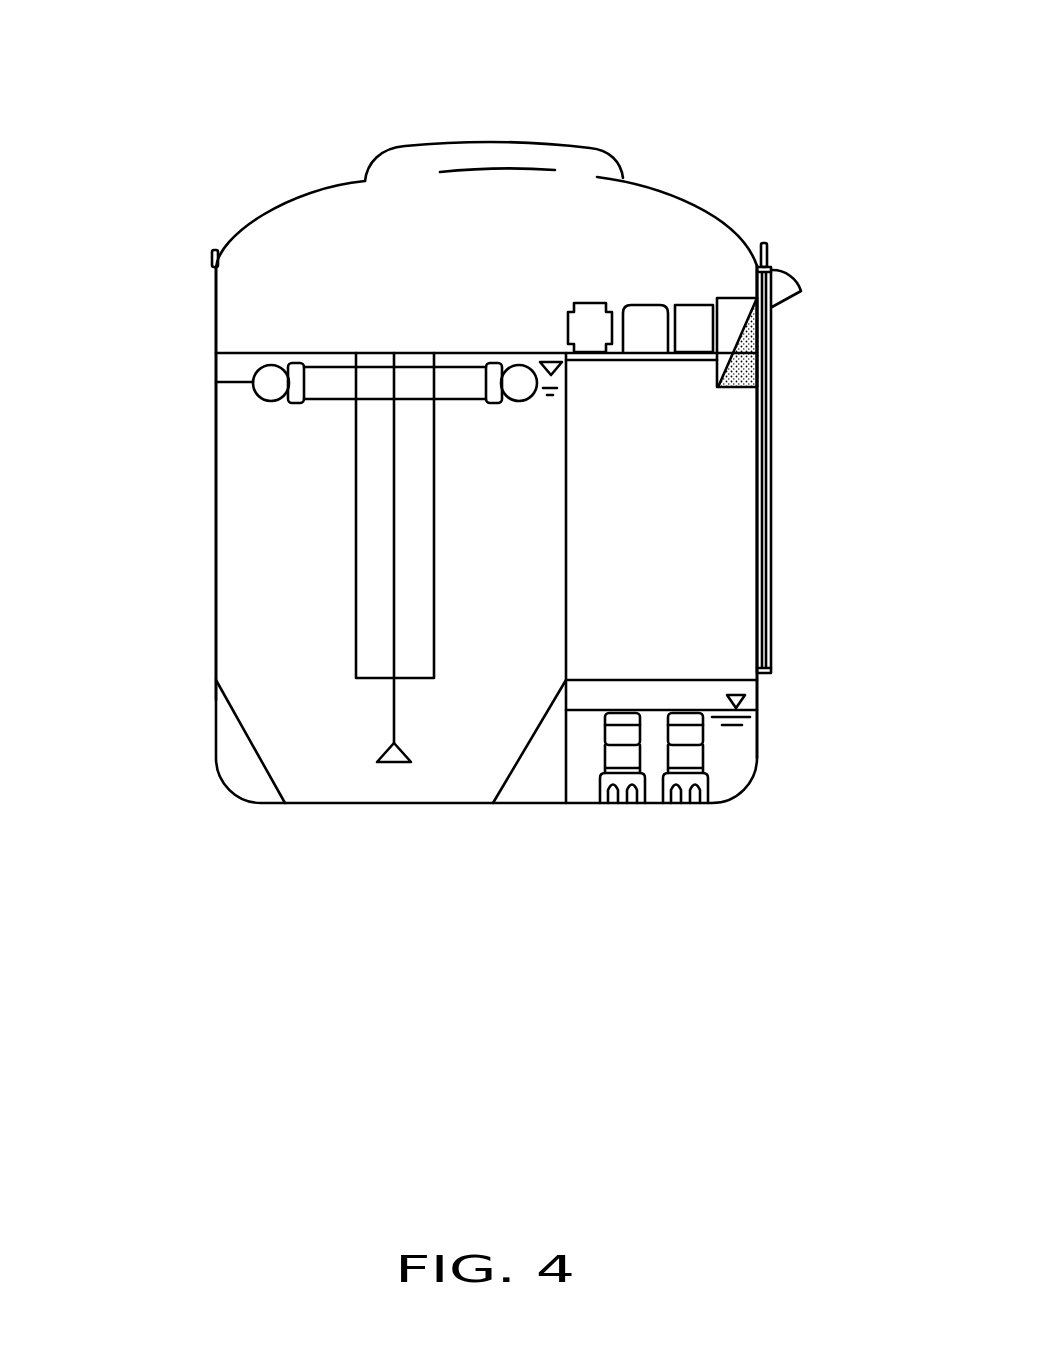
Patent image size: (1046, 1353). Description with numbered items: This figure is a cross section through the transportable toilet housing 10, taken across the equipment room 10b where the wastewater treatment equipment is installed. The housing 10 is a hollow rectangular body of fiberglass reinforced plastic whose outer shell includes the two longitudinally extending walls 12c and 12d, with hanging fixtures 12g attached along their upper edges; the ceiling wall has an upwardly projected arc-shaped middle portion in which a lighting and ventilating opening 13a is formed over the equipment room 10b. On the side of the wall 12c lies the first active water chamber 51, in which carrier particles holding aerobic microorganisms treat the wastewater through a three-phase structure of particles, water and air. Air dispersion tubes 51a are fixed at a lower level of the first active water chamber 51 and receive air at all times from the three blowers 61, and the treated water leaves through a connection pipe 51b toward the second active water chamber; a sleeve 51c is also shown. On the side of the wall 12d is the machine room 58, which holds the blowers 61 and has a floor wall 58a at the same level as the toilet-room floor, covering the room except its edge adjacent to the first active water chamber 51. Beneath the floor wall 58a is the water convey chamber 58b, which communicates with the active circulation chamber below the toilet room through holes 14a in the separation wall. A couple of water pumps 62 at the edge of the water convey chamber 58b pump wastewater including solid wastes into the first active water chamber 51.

The housing 10 is at (742, 186).
The equipment room 10b is at (300, 236).
The lighting and ventilating opening 13a is at (498, 143).
The hanging fixtures 12g is at (212, 262).
The longitudinally extending wall 12c is at (216, 397).
The longitudinally extending wall 12d is at (770, 393).
The first active water chamber 51 is at (247, 507).
The air dispersion tubes 51a is at (397, 703).
The connection pipe 51b is at (272, 378).
The sleeve 51c is at (356, 632).
The blowers 61 is at (590, 308).
The machine room 58 is at (730, 505).
The floor wall 58a is at (722, 680).
The water convey chamber 58b is at (728, 775).
The holes 14a is at (748, 688).
The water pumps 62 is at (687, 710).